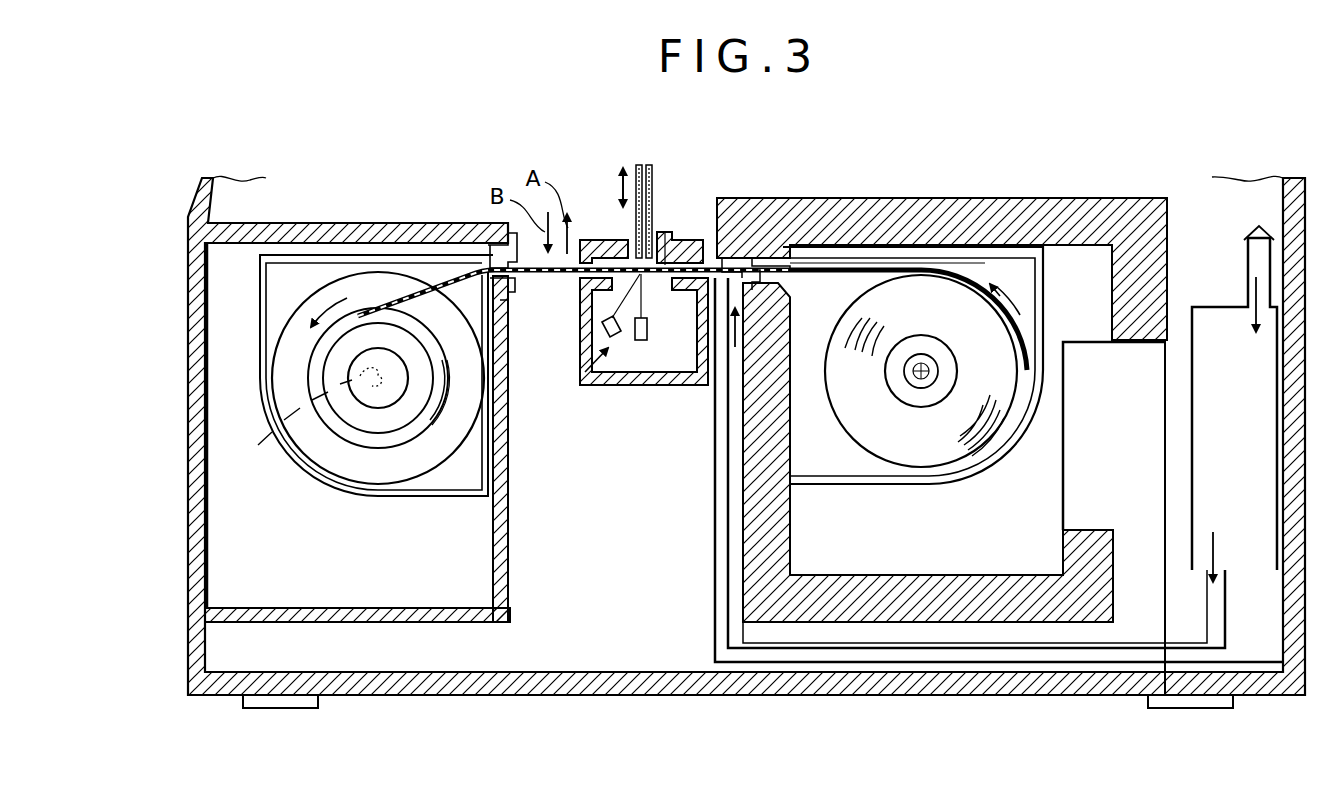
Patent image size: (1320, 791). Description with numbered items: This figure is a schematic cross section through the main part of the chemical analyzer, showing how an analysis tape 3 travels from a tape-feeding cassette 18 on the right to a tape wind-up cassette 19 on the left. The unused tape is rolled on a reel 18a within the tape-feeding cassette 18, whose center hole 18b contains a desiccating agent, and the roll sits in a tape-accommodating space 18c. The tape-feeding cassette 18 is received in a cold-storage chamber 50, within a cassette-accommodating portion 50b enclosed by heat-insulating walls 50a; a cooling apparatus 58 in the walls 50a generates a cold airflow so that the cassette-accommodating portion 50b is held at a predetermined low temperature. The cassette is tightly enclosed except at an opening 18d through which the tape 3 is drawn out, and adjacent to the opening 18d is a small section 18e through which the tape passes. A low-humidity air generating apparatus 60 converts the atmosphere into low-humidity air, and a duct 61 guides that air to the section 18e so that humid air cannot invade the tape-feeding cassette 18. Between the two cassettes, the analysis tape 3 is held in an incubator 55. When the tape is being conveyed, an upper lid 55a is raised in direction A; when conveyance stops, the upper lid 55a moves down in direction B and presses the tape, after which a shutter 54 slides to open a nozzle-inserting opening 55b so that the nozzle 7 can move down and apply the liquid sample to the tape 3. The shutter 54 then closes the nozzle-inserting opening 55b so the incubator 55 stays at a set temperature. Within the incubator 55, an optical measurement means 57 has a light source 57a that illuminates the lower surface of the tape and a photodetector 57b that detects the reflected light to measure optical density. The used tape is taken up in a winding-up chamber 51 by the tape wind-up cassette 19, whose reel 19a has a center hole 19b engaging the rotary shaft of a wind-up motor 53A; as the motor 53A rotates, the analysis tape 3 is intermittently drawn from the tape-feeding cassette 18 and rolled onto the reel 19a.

The analysis tape 3 is at (826, 275).
The nozzle 7 is at (636, 162).
The tape-feeding cassette 18 is at (926, 429).
The reel 18a is at (895, 388).
The hole 18b is at (928, 358).
The tape-accommodating space 18c is at (975, 268).
The opening 18d is at (728, 262).
The small section 18e is at (760, 265).
The tape wind-up cassette 19 is at (264, 322).
The reel 19a is at (378, 435).
The hole 19b is at (313, 410).
The cold-storage chamber 50 is at (1000, 548).
The walls 50a is at (797, 602).
The cassette-accommodating portion 50b is at (1083, 283).
The winding-up chamber 51 is at (467, 593).
The wind-up motor 53A is at (358, 388).
The shutter 54 is at (678, 236).
The incubator 55 is at (598, 388).
The upper lid 55a is at (588, 238).
The nozzle-inserting opening 55b is at (662, 230).
The optical measurement means 57 is at (592, 368).
The light source 57a is at (601, 332).
The photodetector 57b is at (650, 340).
The cooling apparatus 58 is at (1148, 372).
The low-humidity air generating apparatus 60 is at (1256, 570).
The duct 61 is at (888, 672).